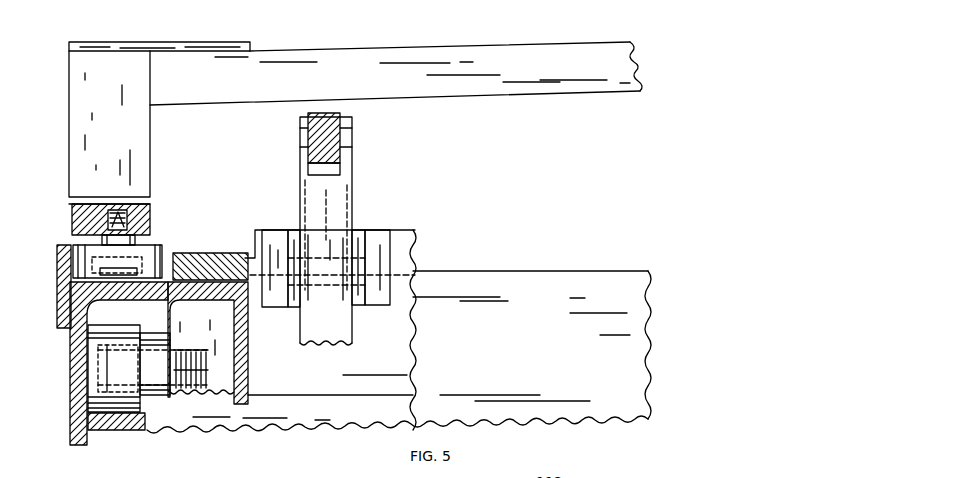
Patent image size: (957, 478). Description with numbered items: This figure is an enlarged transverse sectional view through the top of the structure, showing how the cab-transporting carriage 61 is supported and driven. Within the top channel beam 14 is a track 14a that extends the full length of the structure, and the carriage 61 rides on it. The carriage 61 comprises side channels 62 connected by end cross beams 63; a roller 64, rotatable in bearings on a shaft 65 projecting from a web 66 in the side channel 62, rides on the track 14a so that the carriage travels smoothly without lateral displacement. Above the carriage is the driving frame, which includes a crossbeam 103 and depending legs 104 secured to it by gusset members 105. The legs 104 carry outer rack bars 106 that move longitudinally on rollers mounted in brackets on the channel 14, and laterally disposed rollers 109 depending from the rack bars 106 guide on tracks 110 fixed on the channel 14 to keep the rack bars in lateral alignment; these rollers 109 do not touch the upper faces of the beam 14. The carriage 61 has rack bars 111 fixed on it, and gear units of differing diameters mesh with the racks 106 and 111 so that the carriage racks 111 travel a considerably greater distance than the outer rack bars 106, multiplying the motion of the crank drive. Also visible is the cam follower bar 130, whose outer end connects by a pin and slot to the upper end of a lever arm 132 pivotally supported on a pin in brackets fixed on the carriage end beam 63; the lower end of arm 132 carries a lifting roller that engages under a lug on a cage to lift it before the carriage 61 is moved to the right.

The top channel beam 14 is at (72, 352).
The track 14a is at (100, 432).
The carriage 61 is at (416, 266).
The side channel 62 is at (240, 353).
The end cross beam 63 is at (529, 366).
The roller 64 is at (113, 332).
The shaft 65 is at (129, 333).
The web 66 is at (204, 317).
The crossbeam 103 is at (332, 60).
The depending leg 104 is at (87, 113).
The gusset member 105 is at (198, 42).
The outer rack bar 106 is at (143, 222).
The laterally disposed roller 109 is at (160, 253).
The track 110 is at (57, 258).
The rack bar 111 is at (218, 260).
The cam follower bar 130 is at (335, 155).
The lever arm 132 is at (345, 198).